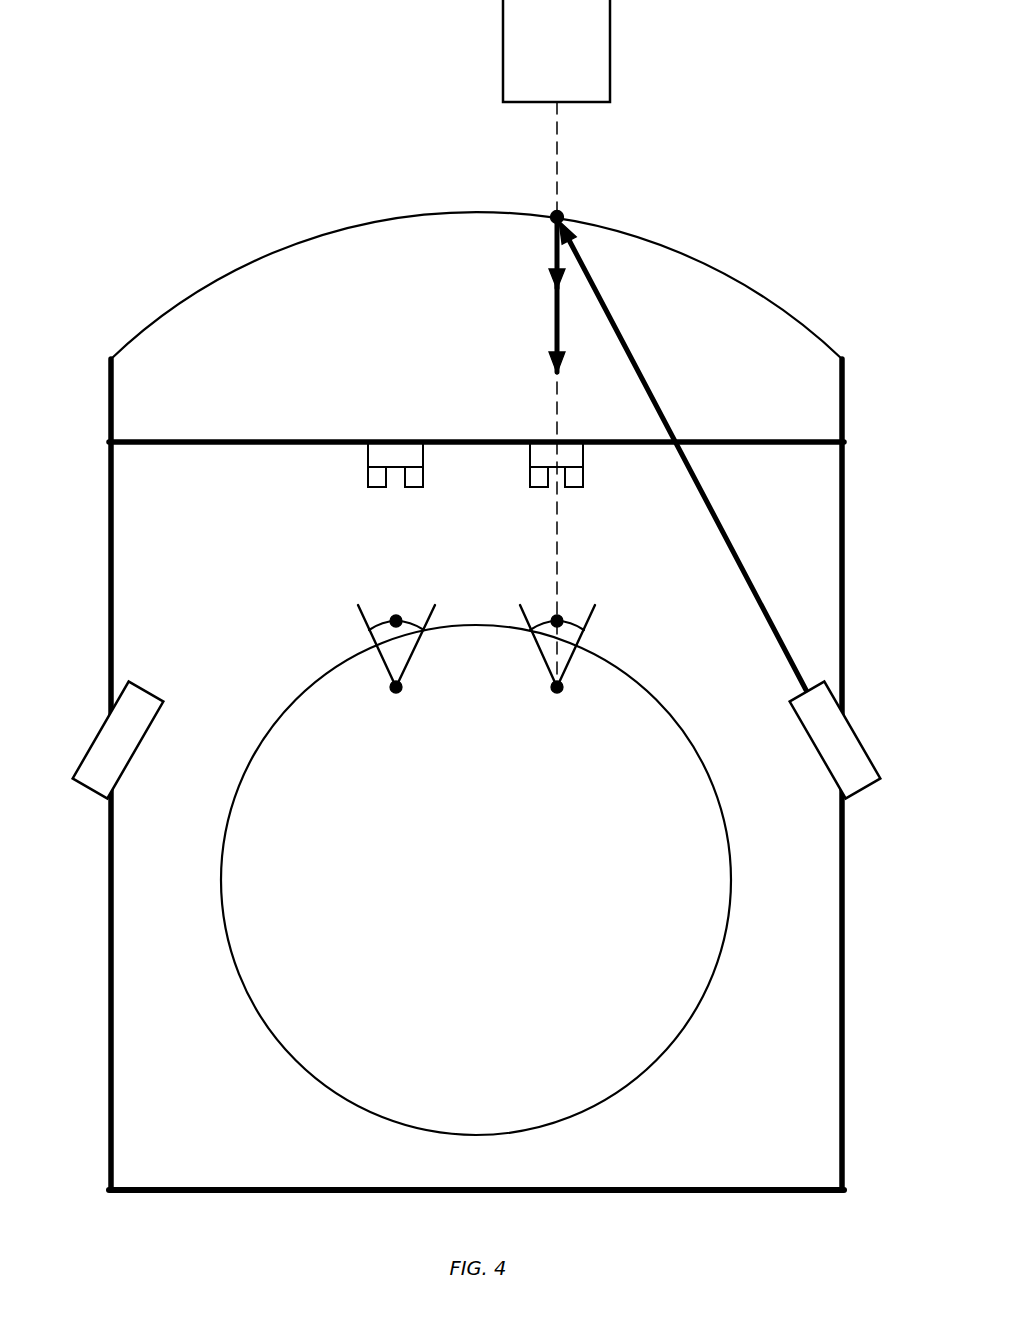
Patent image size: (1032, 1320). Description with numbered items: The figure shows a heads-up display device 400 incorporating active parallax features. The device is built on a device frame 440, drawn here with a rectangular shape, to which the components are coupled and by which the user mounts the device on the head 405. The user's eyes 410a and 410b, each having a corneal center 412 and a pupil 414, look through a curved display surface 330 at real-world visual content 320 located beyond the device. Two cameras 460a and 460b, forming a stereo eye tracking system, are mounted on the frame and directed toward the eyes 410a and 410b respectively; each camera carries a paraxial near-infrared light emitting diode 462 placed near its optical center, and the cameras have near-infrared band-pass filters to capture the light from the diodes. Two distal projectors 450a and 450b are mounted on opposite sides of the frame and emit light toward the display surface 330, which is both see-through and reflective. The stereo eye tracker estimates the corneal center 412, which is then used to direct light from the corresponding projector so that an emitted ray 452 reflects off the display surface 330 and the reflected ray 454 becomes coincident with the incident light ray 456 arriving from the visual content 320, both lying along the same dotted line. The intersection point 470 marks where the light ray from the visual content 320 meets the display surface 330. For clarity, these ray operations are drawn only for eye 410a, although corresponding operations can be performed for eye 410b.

The visual content 320 is at (556, 51).
The display surface 330 is at (678, 252).
The heads-up display device 400 is at (478, 666).
The head 405 is at (476, 880).
The eye 410a is at (586, 638).
The eye 410b is at (357, 636).
The corneal center 412 is at (553, 689).
The pupil 414 is at (553, 616).
The device frame 440 is at (115, 478).
The projector 450a is at (822, 722).
The projector 450b is at (127, 722).
The emitted ray 452 is at (650, 392).
The reflected ray 454 is at (556, 307).
The incident light ray 456 is at (556, 247).
The camera 460a is at (540, 453).
The camera 460b is at (398, 453).
The light emitting diode 462 is at (540, 477).
The intersection point 470 is at (555, 213).